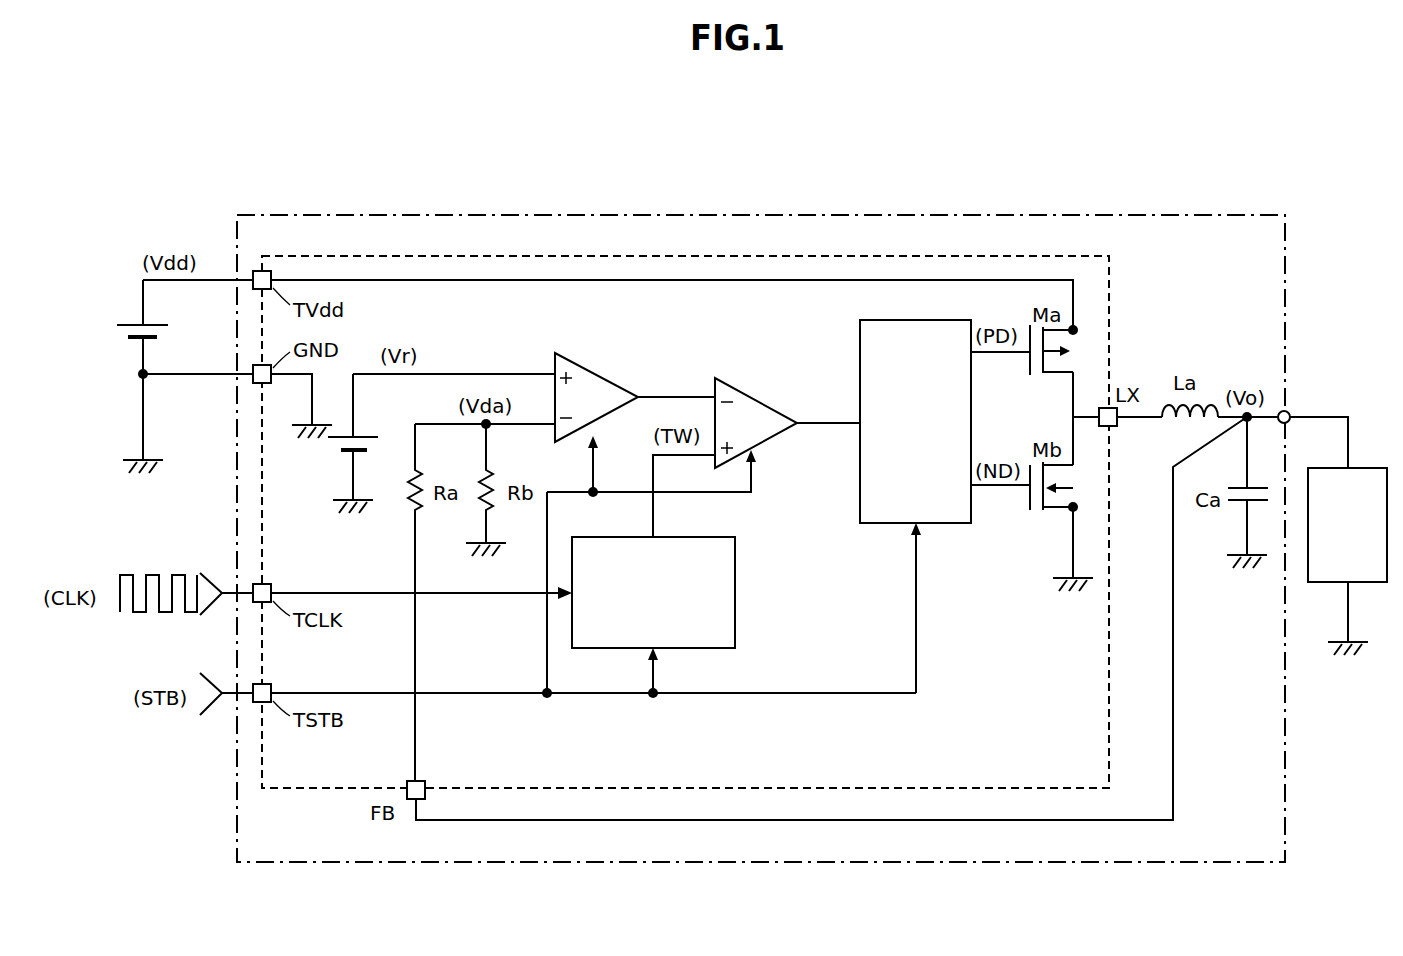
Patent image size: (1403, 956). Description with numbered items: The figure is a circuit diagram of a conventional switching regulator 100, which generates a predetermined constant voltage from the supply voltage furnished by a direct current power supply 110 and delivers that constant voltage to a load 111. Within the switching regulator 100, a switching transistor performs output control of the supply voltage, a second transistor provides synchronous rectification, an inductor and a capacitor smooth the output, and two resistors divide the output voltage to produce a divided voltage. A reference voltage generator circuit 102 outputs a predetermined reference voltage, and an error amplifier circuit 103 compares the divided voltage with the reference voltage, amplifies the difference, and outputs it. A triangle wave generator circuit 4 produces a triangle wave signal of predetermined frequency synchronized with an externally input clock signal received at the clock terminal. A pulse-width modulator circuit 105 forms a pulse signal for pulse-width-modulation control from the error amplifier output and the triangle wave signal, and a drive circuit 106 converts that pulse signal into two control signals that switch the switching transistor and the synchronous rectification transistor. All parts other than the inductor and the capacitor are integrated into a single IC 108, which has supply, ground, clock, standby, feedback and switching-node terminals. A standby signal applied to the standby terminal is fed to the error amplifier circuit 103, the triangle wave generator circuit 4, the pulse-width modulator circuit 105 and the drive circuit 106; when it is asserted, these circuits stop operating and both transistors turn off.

The switching regulator 100 is at (815, 205).
The IC 108 is at (1120, 300).
The direct current power supply 110 is at (135, 325).
The reference voltage generator circuit 102 is at (368, 431).
The error amplifier circuit 103 is at (592, 365).
The PWM circuit 105 is at (738, 385).
The drive circuit 106 is at (958, 527).
The triangle wave generator circuit 4 is at (736, 586).
The load 111 is at (1363, 463).